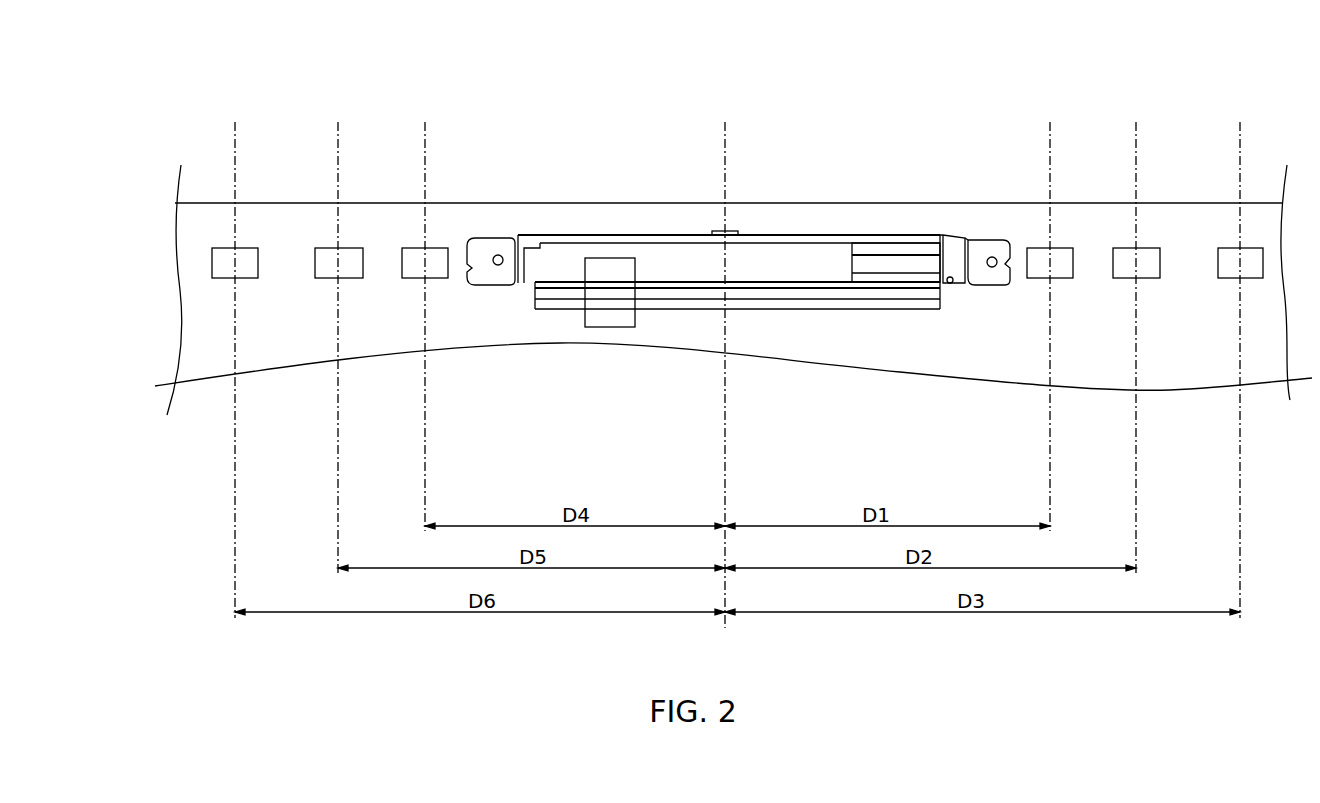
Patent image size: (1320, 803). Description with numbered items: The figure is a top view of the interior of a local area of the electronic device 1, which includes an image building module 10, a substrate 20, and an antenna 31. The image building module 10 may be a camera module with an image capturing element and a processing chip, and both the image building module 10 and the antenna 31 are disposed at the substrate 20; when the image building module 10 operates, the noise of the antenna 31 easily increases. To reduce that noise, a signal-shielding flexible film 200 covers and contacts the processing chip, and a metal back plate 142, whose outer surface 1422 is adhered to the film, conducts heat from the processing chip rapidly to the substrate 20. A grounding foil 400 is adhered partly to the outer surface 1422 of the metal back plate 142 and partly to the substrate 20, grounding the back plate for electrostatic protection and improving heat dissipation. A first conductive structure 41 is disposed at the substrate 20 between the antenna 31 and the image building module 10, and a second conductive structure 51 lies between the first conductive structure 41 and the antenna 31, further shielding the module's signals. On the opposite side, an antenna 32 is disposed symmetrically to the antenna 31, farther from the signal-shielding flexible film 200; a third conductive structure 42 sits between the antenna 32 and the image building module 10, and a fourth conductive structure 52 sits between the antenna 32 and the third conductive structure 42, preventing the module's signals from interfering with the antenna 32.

The electronic device 1 is at (548, 204).
The image building module 10 is at (736, 250).
The substrate 20 is at (803, 220).
The signal-shielding flexible film 200 is at (902, 253).
The antenna 32 is at (220, 262).
The fourth conductive structure 52 is at (323, 262).
The third conductive structure 42 is at (410, 262).
The first conductive structure 41 is at (1060, 262).
The second conductive structure 51 is at (1145, 262).
The antenna 31 is at (1250, 262).
The metal back plate 142 is at (490, 273).
The grounding foil 400 is at (612, 318).
The outer surface 1422 is at (780, 262).